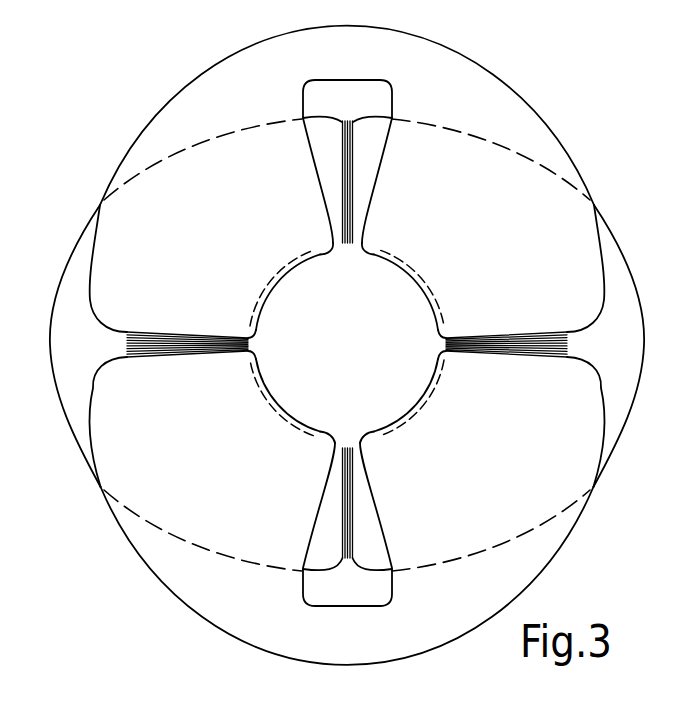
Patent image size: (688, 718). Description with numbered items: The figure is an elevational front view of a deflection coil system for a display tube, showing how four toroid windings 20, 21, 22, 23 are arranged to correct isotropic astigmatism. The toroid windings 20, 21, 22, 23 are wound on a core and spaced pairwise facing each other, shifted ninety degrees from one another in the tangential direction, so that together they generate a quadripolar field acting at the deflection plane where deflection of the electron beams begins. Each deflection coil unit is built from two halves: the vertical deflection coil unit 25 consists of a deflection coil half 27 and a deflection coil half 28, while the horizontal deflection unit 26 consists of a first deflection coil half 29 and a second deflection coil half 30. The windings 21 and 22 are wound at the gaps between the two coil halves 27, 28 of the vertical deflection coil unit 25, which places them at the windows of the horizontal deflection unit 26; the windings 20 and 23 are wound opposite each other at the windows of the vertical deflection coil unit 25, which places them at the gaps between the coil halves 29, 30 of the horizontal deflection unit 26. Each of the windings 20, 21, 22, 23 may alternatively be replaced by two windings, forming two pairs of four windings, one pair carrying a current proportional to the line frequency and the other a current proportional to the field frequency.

The toroid winding 20 is at (126, 346).
The toroid winding 21 is at (348, 558).
The toroid winding 22 is at (348, 120).
The toroid winding 23 is at (567, 344).
The vertical deflection coil unit 25 is at (90, 468).
The horizontal deflection unit 26 is at (92, 302).
The deflection coil half 27 is at (627, 432).
The deflection coil half 28 is at (56, 398).
The first deflection coil half 29 is at (138, 134).
The second deflection coil half 30 is at (88, 442).